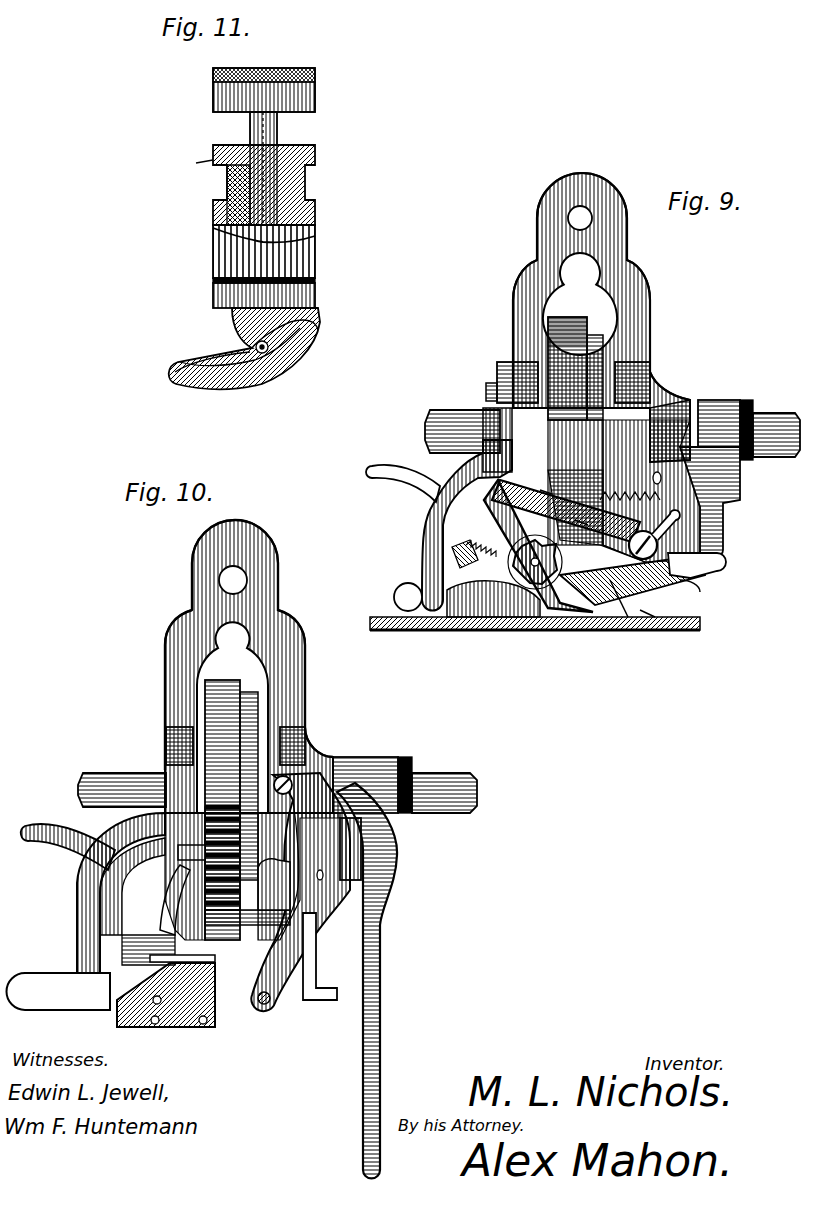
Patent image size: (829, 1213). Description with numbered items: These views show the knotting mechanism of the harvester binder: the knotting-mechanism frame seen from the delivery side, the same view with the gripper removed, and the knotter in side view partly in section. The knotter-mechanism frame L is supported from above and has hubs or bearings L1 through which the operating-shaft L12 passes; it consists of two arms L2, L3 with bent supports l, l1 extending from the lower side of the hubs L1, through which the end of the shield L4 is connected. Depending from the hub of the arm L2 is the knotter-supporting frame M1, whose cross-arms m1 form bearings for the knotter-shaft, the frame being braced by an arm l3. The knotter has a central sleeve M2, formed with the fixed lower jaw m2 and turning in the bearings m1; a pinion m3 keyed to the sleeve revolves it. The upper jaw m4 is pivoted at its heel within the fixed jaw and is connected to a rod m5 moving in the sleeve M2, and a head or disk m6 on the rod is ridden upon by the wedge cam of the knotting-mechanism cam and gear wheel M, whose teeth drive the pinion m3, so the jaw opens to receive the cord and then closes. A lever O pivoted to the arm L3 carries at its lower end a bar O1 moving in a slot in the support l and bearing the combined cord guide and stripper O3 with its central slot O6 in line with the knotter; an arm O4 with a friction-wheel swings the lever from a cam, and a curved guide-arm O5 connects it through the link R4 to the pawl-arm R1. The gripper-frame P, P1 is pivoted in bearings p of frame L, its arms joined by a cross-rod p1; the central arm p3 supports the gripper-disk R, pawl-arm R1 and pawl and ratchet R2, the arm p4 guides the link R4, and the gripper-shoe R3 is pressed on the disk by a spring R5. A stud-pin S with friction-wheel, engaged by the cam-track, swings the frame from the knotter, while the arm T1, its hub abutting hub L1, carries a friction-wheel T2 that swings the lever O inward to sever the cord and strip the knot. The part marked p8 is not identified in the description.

In FIG. 11, the head or disk m6 is at (316, 72).
In FIG. 11, the rod m5 is at (278, 130).
In FIG. 11, the central sleeve M2 is at (306, 178).
In FIG. 11, the connecting cross-arms m1 is at (196, 312).
In FIG. 11, the pinion m3 is at (310, 258).
In FIG. 11, the fixed lower jaw m2 is at (280, 380).
In FIG. 11, the upper jaw m4 is at (245, 356).
In FIG. 9, the knotter-mechanism frame L is at (630, 266).
In FIG. 10, the knotter-mechanism frame L is at (279, 585).
In FIG. 9, the arm of knotter-mechanism frame L2 is at (513, 300).
In FIG. 10, the arm of knotter-mechanism frame L2 is at (166, 665).
In FIG. 9, the arm of knotter-mechanism frame L3 is at (651, 305).
In FIG. 10, the arm of knotter-mechanism frame L3 is at (306, 678).
In FIG. 10, the hubs or bearings L1 is at (150, 773).
In FIG. 9, the shield L4 is at (628, 630).
In FIG. 9, the operating-shaft L12 is at (778, 412).
In FIG. 10, the operating-shaft L12 is at (450, 773).
In FIG. 9, the knotting-mechanism cam and gear wheel M is at (567, 368).
In FIG. 10, the knotting-mechanism cam and gear wheel M is at (220, 682).
In FIG. 10, the knotter-supporting frame M1 is at (180, 852).
In FIG. 9, the stud-pin S is at (575, 440).
In FIG. 9, the bearings p is at (515, 364).
In FIG. 10, the bearings p is at (167, 734).
In FIG. 9, the gripper-frame P is at (486, 392).
In FIG. 9, the gripper-frame arm P1 is at (660, 405).
In FIG. 9, the cross-rod p1 is at (548, 485).
In FIG. 9, the central depending arm p3 is at (648, 630).
In FIG. 9, the depending arm p4 is at (690, 592).
In FIG. 9, the pin p8 is at (594, 525).
In FIG. 9, the ejector arm T1 is at (718, 400).
In FIG. 10, the ejector arm T1 is at (382, 972).
In FIG. 10, the friction-wheel T2 is at (384, 862).
In FIG. 9, the gripper-disk R is at (528, 540).
In FIG. 9, the pawl-arm R1 is at (546, 546).
In FIG. 9, the pawl and ratchet R2 is at (535, 630).
In FIG. 9, the gripper-shoe R3 is at (470, 580).
In FIG. 9, the link R4 is at (632, 580).
In FIG. 9, the spring R5 is at (560, 545).
In FIG. 9, the lever O is at (645, 523).
In FIG. 10, the lever O is at (318, 878).
In FIG. 10, the bar O1 is at (228, 1010).
In FIG. 10, the combined cord guide and stripper O3 is at (91, 924).
In FIG. 9, the arm O4 is at (663, 473).
In FIG. 10, the arm O4 is at (268, 865).
In FIG. 9, the curved guide-arm O5 is at (714, 572).
In FIG. 10, the curved guide-arm O5 is at (266, 1004).
In FIG. 10, the central slot O6 is at (160, 897).
In FIG. 10, the bent arm or support l is at (93, 910).
In FIG. 10, the bent arm or support l1 is at (320, 956).
In FIG. 10, the brace arm l3 is at (247, 929).